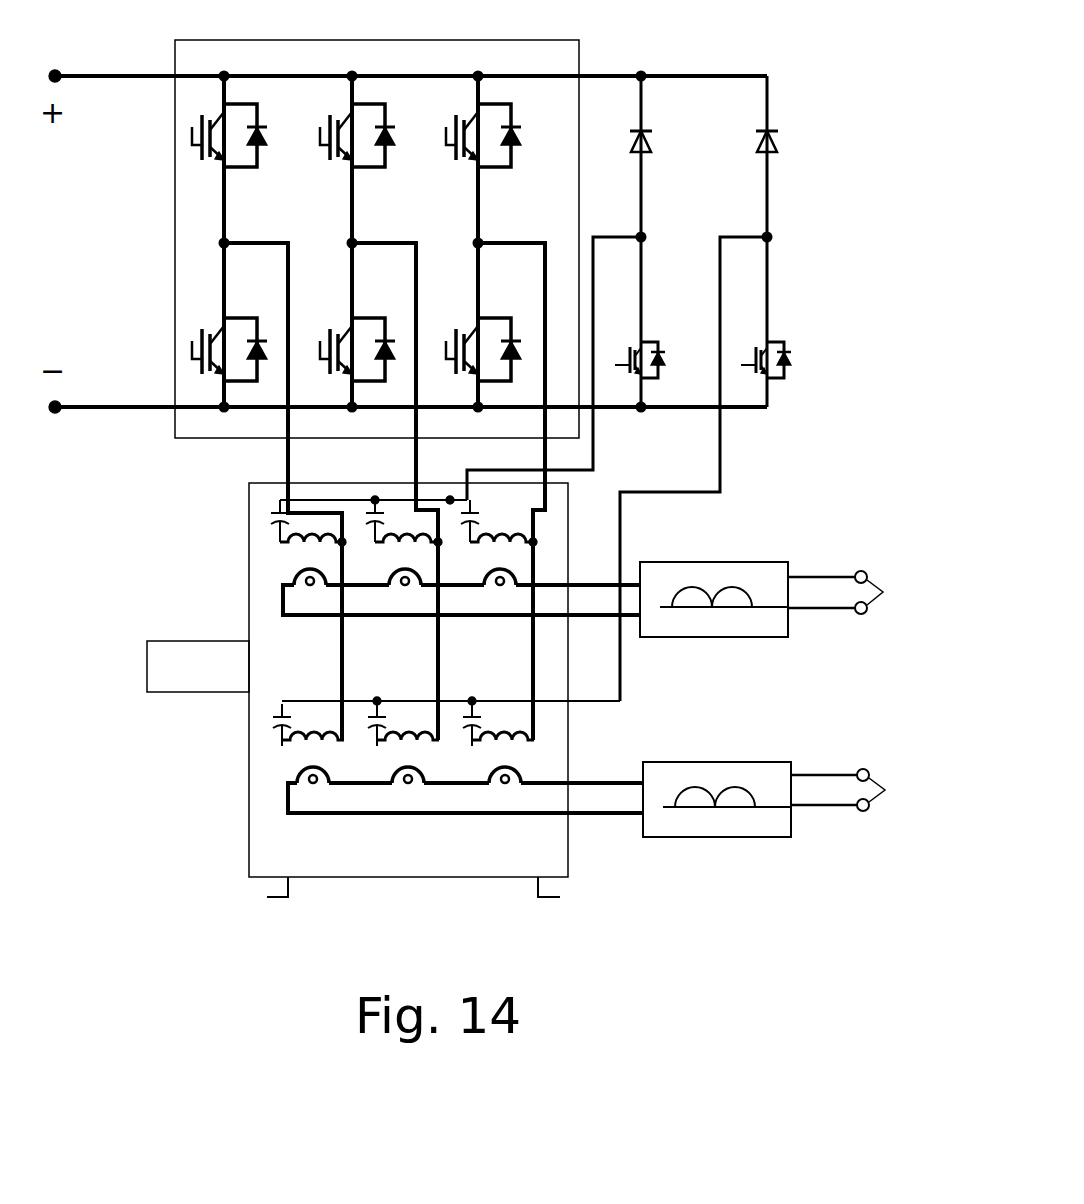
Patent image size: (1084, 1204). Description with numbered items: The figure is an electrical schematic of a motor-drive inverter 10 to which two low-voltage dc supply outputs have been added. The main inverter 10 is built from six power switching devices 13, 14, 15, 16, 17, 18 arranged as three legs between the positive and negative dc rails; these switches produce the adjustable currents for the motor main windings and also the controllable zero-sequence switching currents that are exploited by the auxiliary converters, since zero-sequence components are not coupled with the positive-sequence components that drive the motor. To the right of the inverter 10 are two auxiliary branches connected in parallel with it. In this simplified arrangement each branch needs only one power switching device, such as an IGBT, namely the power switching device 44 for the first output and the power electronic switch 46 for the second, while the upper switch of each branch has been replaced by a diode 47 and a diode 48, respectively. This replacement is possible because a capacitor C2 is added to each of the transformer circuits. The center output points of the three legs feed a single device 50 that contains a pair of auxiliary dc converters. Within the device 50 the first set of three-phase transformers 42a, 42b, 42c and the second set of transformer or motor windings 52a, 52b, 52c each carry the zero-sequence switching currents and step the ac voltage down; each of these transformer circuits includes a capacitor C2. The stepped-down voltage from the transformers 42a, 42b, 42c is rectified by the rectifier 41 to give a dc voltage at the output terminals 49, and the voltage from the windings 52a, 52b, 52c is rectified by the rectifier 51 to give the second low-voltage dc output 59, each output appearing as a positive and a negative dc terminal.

The inverter 10 is at (582, 71).
The power switching device 13 is at (188, 147).
The power switching device 14 is at (186, 350).
The power switching device 15 is at (323, 136).
The power switching device 16 is at (318, 350).
The power switching device 17 is at (453, 136).
The power switching device 18 is at (454, 340).
The rectifier 41 is at (672, 562).
The three-phase transformer 42a is at (285, 560).
The three-phase transformer 42b is at (423, 567).
The three-phase transformer 42c is at (517, 563).
The power switching device 44 is at (629, 360).
The power electronic switch 46 is at (744, 358).
The diode 47 is at (634, 140).
The diode 48 is at (760, 148).
The output terminals 49 is at (857, 594).
The device 50 is at (249, 773).
The rectifier 51 is at (705, 762).
The transformer winding 52a is at (280, 764).
The transformer winding 52b is at (393, 755).
The transformer winding 52c is at (510, 763).
The low-voltage DC output 59 is at (858, 794).
The capacitor C2 is at (269, 518).